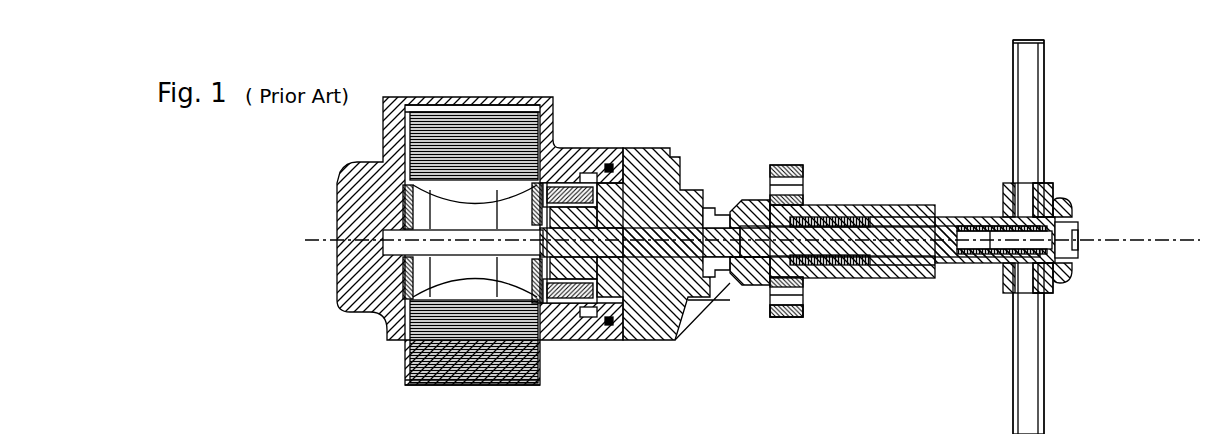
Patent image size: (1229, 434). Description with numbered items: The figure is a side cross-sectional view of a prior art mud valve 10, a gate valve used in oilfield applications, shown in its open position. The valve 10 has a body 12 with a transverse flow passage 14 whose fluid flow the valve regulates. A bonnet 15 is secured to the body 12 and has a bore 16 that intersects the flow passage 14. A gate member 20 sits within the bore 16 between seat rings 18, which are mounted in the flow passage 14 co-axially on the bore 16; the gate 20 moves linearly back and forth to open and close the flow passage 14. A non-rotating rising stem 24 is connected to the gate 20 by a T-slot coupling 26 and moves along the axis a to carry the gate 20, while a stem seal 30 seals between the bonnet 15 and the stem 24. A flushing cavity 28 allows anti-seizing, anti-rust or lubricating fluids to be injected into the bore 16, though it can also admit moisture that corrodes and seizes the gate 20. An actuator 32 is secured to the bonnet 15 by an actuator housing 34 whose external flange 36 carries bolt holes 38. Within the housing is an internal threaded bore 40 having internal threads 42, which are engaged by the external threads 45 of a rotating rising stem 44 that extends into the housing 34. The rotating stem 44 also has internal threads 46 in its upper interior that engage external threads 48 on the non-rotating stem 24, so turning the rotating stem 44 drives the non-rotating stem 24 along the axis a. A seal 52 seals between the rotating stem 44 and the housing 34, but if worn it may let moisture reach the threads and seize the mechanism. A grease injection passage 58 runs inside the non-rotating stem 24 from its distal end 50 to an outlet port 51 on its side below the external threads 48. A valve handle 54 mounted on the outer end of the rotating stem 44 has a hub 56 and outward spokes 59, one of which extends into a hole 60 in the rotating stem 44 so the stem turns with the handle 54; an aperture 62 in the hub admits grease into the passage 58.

The mud valve 10 is at (596, 96).
The body 12 is at (555, 340).
The transverse flow passage 14 is at (510, 383).
The bonnet 15 is at (645, 161).
The bore 16 is at (632, 267).
The seat rings 18 is at (517, 303).
The gate member 20 is at (650, 246).
The non-rotating rising stem 24 is at (903, 226).
The T-slot coupling 26 is at (715, 208).
The flushing cavity 28 is at (716, 293).
The stem seal 30 is at (765, 285).
The actuator 32 is at (834, 159).
The actuator housing 34 is at (845, 278).
The external flange 36 is at (782, 314).
The bolt holes 38 is at (800, 297).
The internal threaded bore 40 is at (818, 217).
The internal threads 42 is at (852, 217).
The rotating rising stem 44 is at (1008, 216).
The external threads 45 is at (884, 217).
The internal threads 46 is at (975, 264).
The external threads 48 is at (965, 257).
The distal end 50 is at (1090, 212).
The outlet port 51 is at (970, 226).
The seal 52 is at (930, 205).
The valve handle 54 is at (1070, 165).
The hub 56 is at (1072, 200).
The grease injection passage 58 is at (1005, 287).
The spokes 59 is at (1040, 64).
The hole 60 is at (1040, 198).
The aperture 62 is at (1080, 235).
The axis a is at (1190, 238).